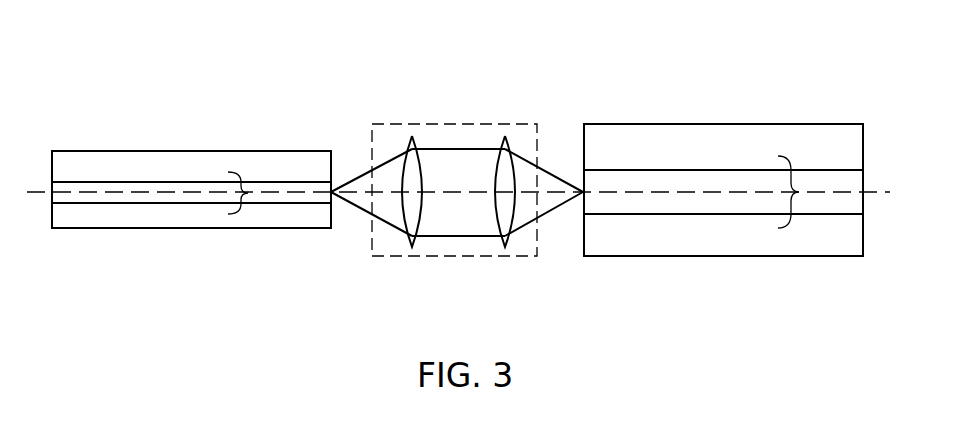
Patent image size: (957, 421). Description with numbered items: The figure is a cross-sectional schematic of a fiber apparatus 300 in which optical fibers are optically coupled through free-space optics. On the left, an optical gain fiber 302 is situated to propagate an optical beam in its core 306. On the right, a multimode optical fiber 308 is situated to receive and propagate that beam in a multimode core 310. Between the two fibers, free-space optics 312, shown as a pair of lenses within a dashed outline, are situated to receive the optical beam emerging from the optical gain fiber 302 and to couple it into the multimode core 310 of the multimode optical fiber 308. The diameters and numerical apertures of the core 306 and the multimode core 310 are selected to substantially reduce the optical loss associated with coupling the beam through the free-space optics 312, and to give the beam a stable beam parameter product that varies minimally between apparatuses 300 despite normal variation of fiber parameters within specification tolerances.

The fiber apparatus 300 is at (280, 75).
The optical gain fiber 302 is at (191, 186).
The core 306 is at (120, 197).
The multimode optical fiber 308 is at (723, 195).
The multimode core 310 is at (685, 201).
The free-space optics 312 is at (437, 123).